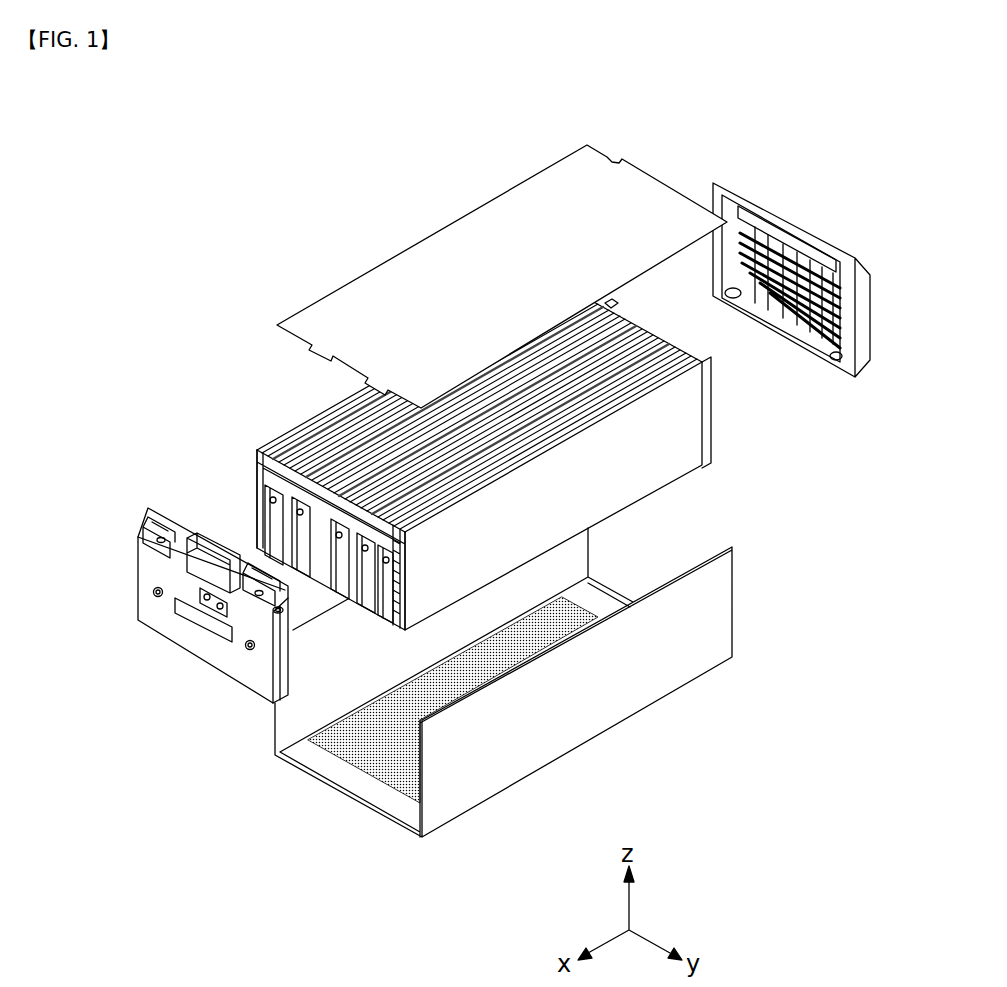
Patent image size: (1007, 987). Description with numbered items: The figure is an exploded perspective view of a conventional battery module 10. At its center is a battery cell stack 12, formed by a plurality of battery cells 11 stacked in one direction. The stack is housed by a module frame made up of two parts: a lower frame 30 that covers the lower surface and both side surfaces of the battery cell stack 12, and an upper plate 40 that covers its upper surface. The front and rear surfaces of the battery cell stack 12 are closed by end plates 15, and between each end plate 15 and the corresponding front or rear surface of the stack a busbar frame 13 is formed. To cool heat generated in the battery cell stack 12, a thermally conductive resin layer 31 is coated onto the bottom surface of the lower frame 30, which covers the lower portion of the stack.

The battery module 10 is at (486, 92).
The battery cell 11 is at (656, 454).
The battery cell stack 12 is at (340, 441).
The busbar frame 13 is at (249, 497).
The end plate 15 is at (202, 650).
The lower frame 30 is at (499, 685).
The thermally conductive resin layer 31 is at (380, 752).
The upper plate 40 is at (440, 258).